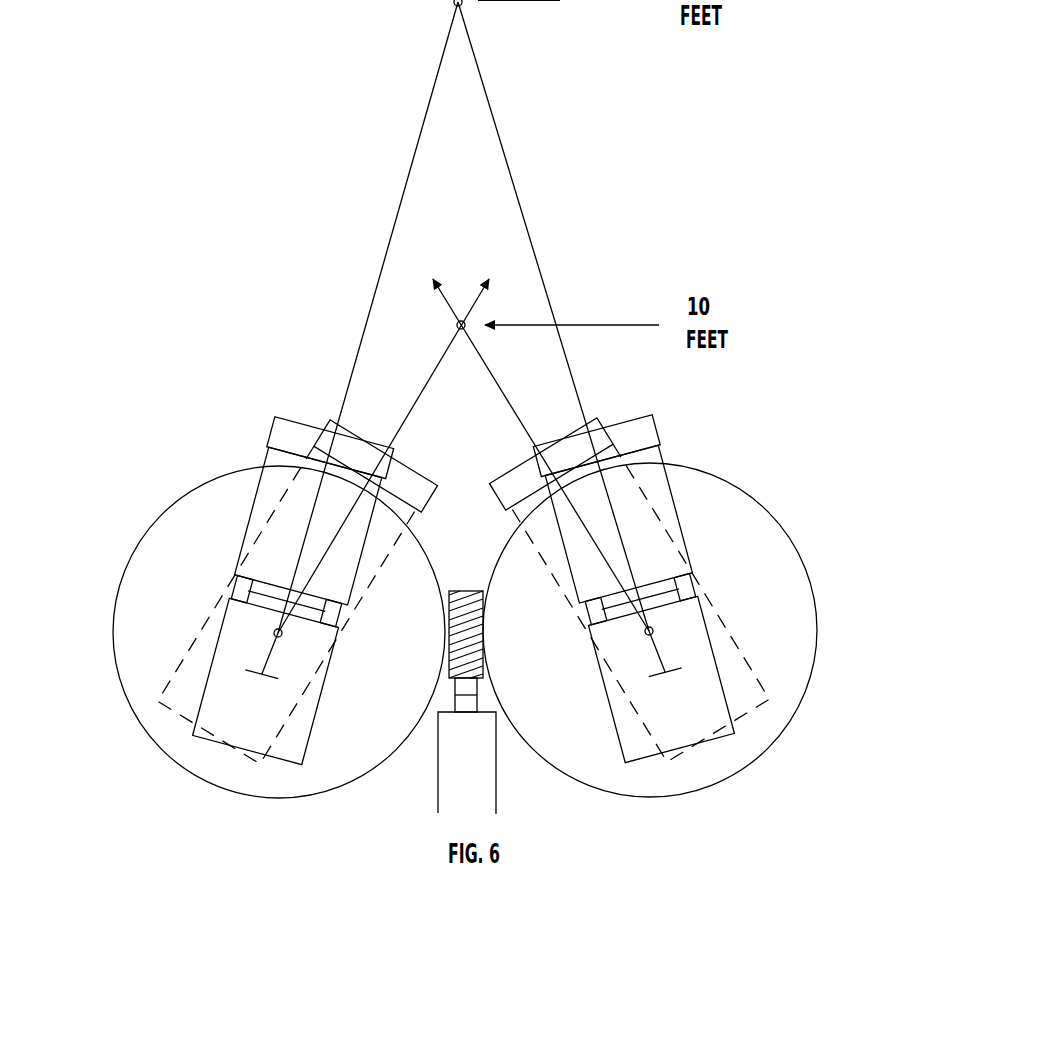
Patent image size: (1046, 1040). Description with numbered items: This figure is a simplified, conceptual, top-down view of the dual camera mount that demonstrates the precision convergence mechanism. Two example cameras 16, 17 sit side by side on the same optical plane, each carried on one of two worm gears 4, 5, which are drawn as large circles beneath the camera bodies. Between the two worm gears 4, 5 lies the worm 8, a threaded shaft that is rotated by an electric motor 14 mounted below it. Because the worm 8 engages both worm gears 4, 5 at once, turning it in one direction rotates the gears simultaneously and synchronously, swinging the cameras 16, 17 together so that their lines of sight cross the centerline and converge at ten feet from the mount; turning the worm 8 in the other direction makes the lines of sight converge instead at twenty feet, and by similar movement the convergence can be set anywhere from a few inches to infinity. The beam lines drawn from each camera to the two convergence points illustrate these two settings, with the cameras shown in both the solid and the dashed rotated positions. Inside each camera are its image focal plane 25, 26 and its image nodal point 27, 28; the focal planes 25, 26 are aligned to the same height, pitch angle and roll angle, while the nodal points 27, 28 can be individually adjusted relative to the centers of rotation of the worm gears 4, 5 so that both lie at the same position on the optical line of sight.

The worm gear 4 is at (103, 637).
The worm gear 5 is at (823, 613).
The worm 8 is at (465, 588).
The electric motor 14 is at (457, 773).
The camera 16 is at (262, 428).
The camera 17 is at (668, 428).
The image focal plane 25 is at (258, 680).
The image focal plane 26 is at (675, 677).
The image nodal point 27 is at (270, 635).
The image nodal point 28 is at (662, 630).